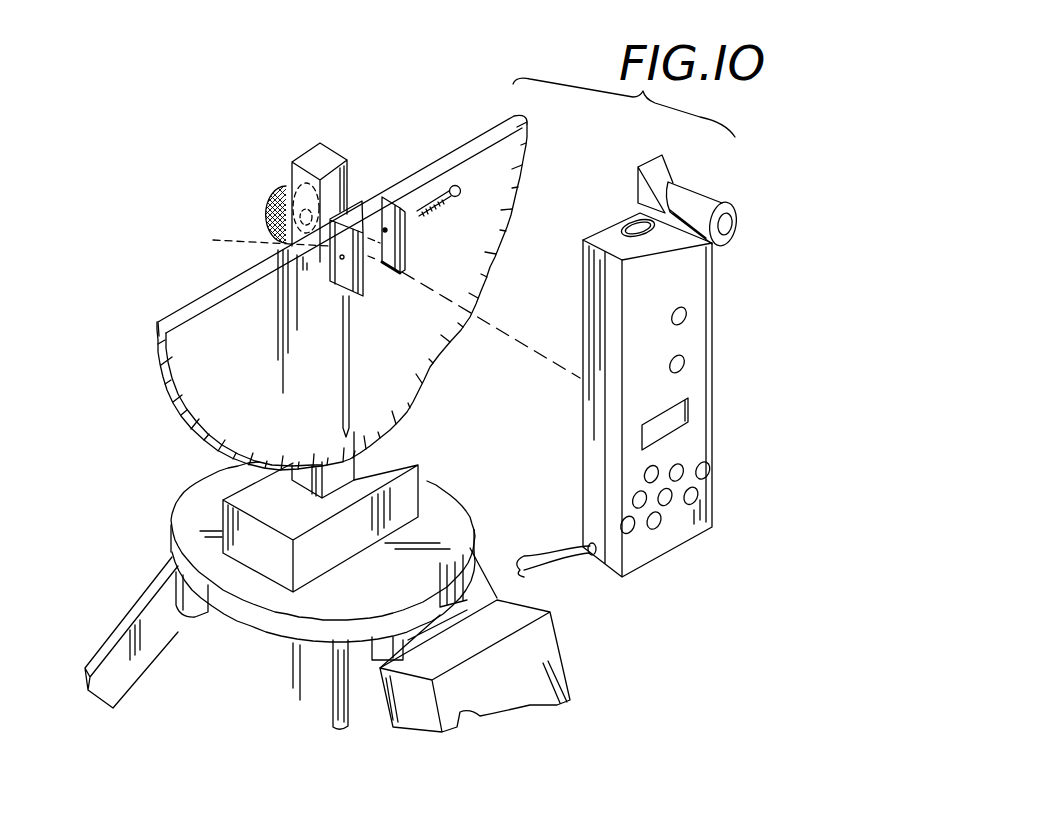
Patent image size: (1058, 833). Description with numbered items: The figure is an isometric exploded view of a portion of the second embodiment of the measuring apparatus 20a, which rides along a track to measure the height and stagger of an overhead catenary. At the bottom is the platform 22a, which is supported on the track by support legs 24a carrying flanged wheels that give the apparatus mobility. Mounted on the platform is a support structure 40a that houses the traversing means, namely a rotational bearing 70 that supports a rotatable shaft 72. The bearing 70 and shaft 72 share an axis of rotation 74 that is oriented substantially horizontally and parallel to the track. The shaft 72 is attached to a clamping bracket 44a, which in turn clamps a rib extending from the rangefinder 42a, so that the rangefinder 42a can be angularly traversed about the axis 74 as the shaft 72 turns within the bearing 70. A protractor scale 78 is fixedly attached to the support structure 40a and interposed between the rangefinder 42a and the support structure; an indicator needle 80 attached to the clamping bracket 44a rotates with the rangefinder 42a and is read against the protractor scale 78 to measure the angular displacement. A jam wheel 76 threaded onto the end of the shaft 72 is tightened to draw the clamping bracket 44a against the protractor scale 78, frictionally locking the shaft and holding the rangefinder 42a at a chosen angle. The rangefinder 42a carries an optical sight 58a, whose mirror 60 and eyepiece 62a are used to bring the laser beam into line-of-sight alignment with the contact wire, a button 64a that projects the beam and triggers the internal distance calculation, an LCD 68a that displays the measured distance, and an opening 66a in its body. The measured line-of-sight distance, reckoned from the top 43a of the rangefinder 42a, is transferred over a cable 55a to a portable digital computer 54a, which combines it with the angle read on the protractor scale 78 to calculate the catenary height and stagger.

The apparatus 20a is at (241, 173).
The jam wheel 76 is at (283, 188).
The rotational bearing 70 is at (270, 216).
The rotatable shaft 72 is at (280, 242).
The protractor scale 78 is at (208, 304).
The clamping bracket 44a is at (357, 205).
The indicator needle 80 is at (348, 378).
The axis of rotation 74 is at (524, 341).
The support structure 40a is at (297, 477).
The platform 22a is at (240, 614).
The support legs 24a is at (150, 587).
The portable digital computer 54a is at (557, 670).
The cable 55a is at (577, 560).
The rangefinder 42a is at (703, 377).
The top of rangefinder 43a is at (587, 234).
The opening 66a is at (627, 225).
The button 64a is at (687, 313).
The LCD 68a is at (673, 423).
The optical sight 58a is at (751, 194).
The mounting arm 60 is at (673, 174).
The eyepiece 62a is at (742, 230).